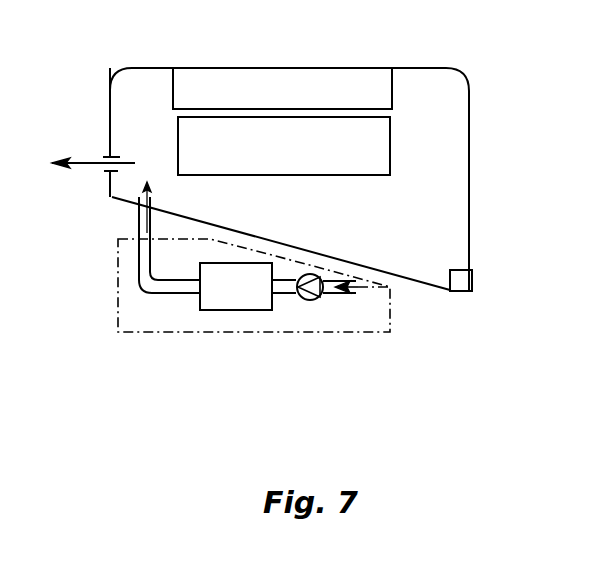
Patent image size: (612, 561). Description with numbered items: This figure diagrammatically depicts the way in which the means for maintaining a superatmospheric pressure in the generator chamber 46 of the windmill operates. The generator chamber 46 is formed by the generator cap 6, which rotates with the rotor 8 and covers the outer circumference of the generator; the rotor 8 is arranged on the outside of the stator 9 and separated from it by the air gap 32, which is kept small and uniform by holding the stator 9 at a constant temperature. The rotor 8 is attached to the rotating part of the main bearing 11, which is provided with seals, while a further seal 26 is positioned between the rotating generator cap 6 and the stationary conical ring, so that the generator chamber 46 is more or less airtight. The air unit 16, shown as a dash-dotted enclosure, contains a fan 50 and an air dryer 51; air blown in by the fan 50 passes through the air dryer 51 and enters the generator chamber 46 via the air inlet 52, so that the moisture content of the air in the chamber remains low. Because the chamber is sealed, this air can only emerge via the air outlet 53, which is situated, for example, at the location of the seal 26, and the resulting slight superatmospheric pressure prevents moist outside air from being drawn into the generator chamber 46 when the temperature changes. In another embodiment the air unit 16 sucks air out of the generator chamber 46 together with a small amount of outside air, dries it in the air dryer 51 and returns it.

The generator cap 6 is at (452, 68).
The rotor 8 is at (358, 80).
The air gap 32 is at (262, 109).
The stator 9 is at (370, 146).
The generator chamber 46 is at (281, 243).
The main bearing 11 is at (462, 278).
The air outlet 53 is at (80, 155).
The seal 26 is at (89, 177).
The air inlet 52 is at (117, 200).
The air dryer 51 is at (232, 302).
The fan 50 is at (309, 302).
The air unit 16 is at (377, 333).